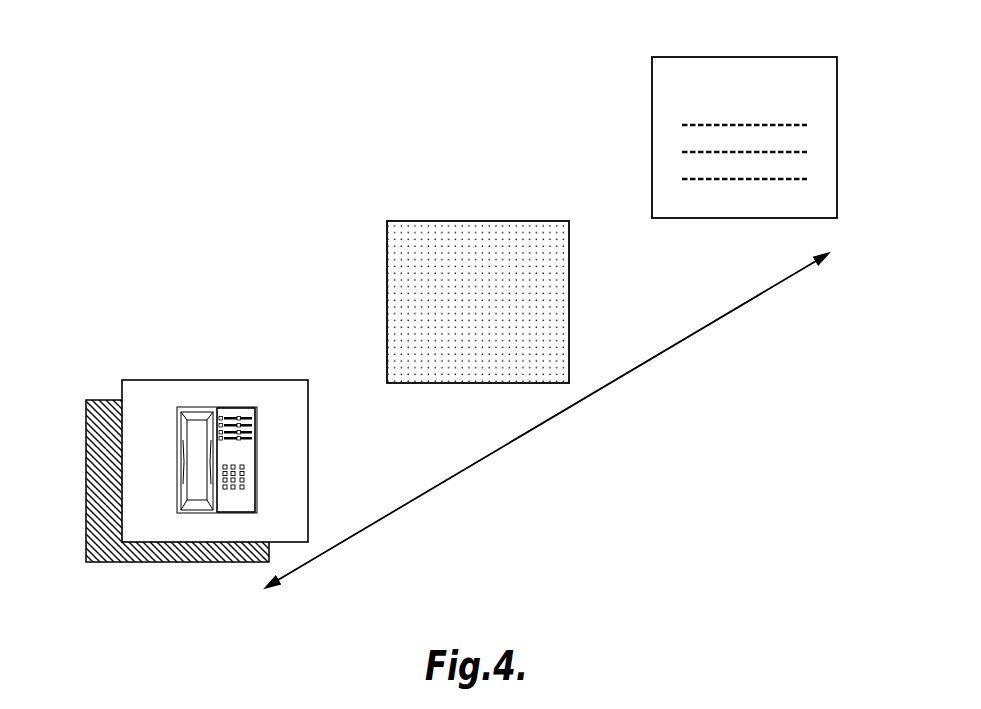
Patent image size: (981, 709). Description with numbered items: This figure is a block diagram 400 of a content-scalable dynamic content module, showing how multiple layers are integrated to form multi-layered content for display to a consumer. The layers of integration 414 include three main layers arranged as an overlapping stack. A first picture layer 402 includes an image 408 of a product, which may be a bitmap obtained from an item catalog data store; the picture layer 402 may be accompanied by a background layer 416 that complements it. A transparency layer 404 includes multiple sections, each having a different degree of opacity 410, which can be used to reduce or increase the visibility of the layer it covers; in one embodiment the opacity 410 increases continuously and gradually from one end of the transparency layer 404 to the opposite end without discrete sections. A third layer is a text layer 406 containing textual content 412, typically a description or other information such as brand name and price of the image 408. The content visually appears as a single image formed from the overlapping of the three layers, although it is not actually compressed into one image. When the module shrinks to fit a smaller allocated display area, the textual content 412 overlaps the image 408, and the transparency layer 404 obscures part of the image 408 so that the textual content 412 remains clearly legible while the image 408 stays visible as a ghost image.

The layered content integration diagram 400 is at (233, 177).
The picture layer 402 is at (122, 380).
The transparency layer 404 is at (387, 283).
The text layer 406 is at (652, 107).
The image 408 is at (257, 488).
The opacity 410 is at (452, 362).
The textual content 412 is at (803, 105).
The layers of integration arrow 414 is at (660, 440).
The background layer 416 is at (108, 564).